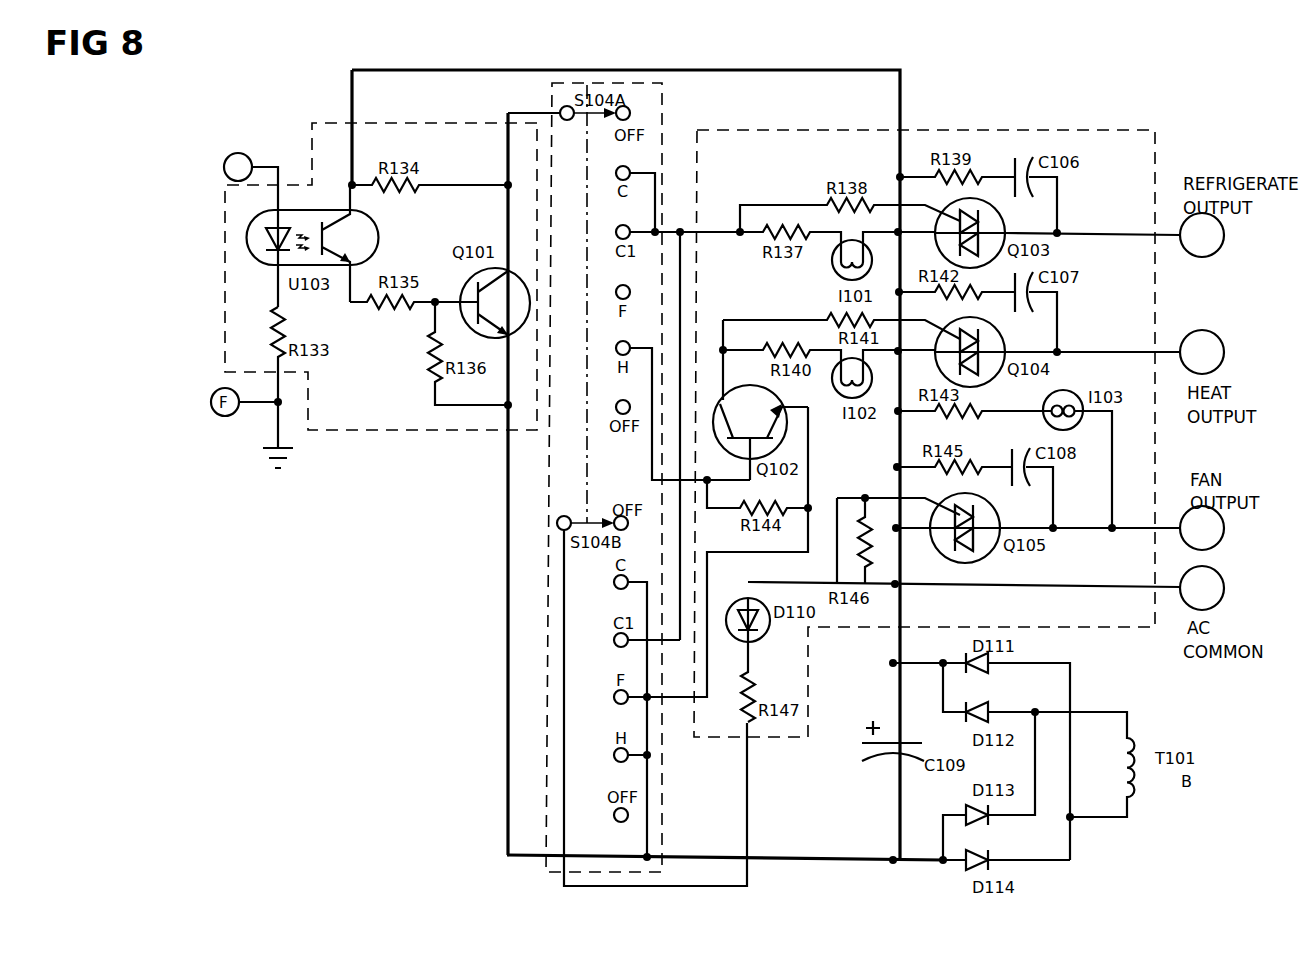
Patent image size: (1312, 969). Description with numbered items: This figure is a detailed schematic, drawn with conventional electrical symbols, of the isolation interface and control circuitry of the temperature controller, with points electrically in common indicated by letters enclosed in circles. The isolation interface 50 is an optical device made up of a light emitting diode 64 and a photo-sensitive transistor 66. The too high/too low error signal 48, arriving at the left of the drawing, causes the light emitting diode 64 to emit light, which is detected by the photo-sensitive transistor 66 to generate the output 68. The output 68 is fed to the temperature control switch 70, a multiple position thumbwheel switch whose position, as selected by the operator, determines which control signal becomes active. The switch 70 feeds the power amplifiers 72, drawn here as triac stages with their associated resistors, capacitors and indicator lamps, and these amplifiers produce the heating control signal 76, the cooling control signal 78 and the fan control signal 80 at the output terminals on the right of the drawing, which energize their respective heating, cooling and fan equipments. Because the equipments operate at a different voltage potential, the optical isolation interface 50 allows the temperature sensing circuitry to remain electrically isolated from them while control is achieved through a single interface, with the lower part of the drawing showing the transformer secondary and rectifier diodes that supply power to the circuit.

The too high/too low error signal 48 is at (240, 152).
The isolation interface 50 is at (320, 120).
The light emitting diode 64 is at (258, 242).
The photo-sensitive transistor 66 is at (345, 237).
The output 68 is at (468, 184).
The temperature control switch 70 is at (666, 102).
The power amplifiers 72 is at (1048, 130).
The heating control signal 76 is at (1168, 351).
The cooling control signal 78 is at (1170, 240).
The fan control signal 80 is at (1166, 526).